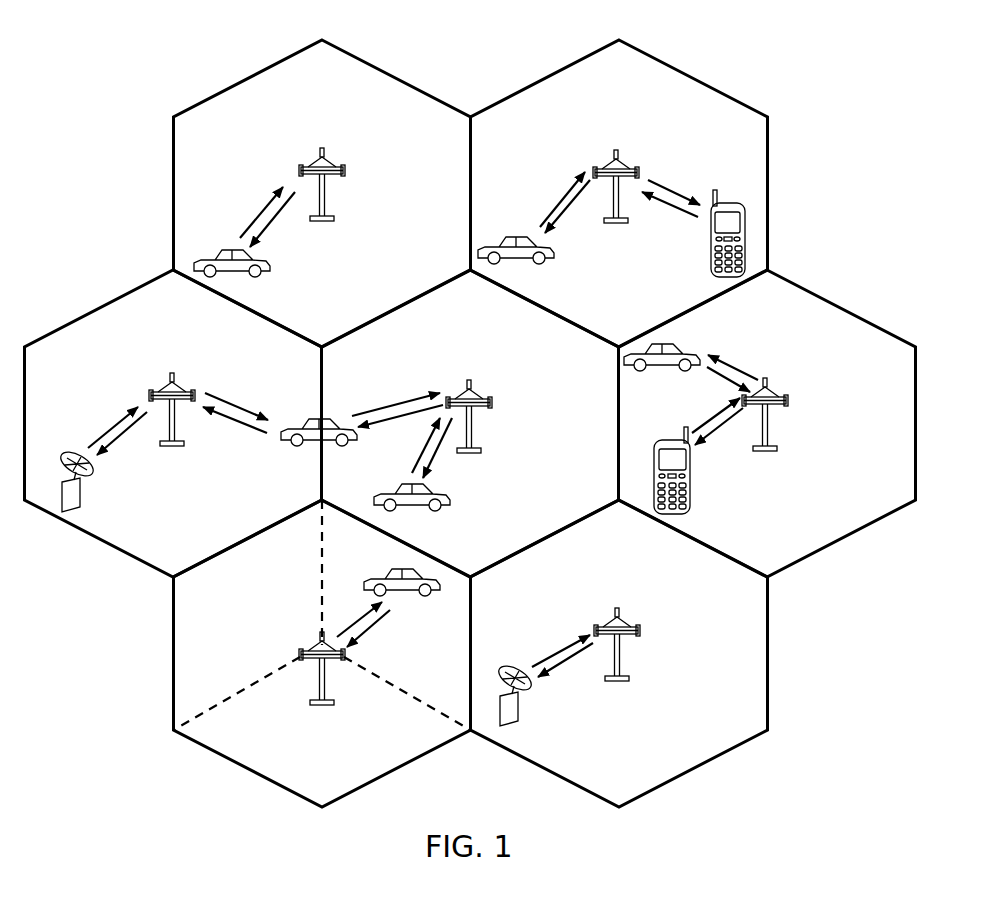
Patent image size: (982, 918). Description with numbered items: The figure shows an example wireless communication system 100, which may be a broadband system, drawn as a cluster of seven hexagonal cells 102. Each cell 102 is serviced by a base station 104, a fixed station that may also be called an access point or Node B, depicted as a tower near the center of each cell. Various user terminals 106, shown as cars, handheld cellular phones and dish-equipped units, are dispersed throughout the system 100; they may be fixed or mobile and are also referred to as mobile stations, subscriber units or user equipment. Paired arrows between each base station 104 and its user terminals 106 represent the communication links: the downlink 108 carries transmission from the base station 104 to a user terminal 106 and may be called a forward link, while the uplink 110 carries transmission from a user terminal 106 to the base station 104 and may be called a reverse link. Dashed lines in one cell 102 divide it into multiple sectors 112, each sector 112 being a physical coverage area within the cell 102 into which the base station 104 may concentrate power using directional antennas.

The wireless communication system 100 is at (901, 119).
The cell 102 is at (256, 73).
The base station 104 is at (322, 148).
The user terminal 106 is at (270, 270).
The downlink 108 is at (267, 228).
The uplink 110 is at (265, 220).
The sector 112 is at (373, 762).